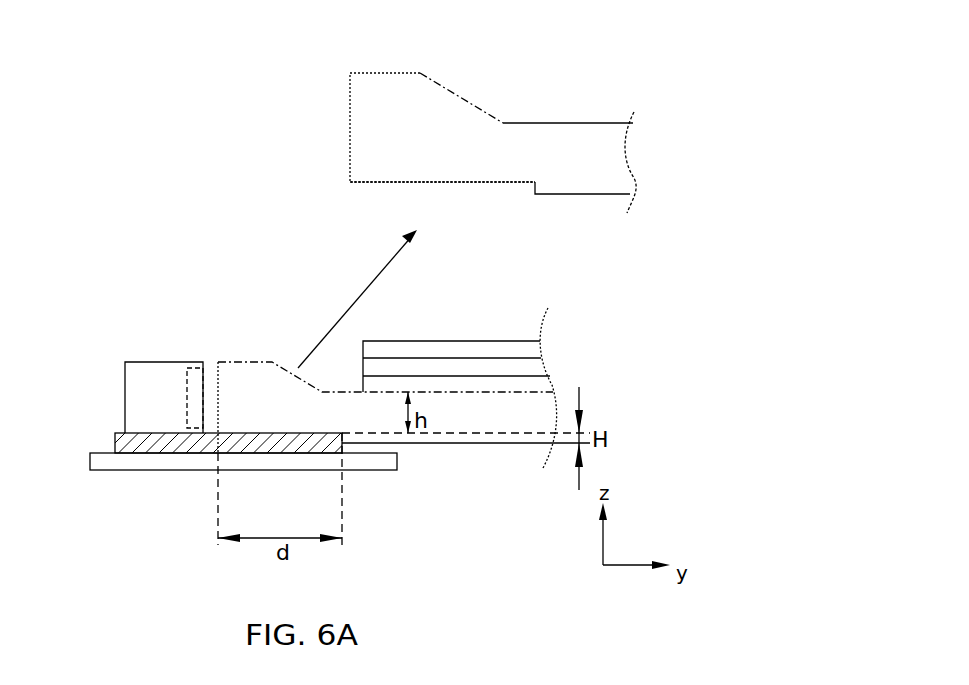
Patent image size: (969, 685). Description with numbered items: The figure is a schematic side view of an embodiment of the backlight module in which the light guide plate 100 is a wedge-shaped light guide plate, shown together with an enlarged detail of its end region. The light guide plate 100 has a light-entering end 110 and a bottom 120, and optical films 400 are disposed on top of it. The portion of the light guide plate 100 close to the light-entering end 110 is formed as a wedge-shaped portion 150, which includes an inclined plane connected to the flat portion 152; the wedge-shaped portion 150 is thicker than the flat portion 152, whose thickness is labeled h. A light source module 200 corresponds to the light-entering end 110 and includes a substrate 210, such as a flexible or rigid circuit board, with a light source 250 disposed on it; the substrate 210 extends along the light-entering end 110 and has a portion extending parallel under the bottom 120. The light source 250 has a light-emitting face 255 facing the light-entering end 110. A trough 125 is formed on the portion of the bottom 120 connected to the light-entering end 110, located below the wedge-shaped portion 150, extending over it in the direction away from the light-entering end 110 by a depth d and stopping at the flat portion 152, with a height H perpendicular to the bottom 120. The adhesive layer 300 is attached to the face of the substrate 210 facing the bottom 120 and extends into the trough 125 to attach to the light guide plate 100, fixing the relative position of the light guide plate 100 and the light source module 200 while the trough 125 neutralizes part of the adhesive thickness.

The light guide plate 100 is at (621, 47).
The light-entering end 110 is at (216, 368).
The bottom 120 is at (468, 443).
The trough 125 is at (458, 200).
The wedge-shaped portion 150 is at (402, 88).
The flat portion 152 is at (580, 143).
The light source module 200 is at (106, 382).
The substrate 210 is at (98, 460).
The light source 250 is at (160, 417).
The light-emitting face 255 is at (205, 393).
The adhesive layer 300 is at (287, 450).
The optical film 400 is at (545, 350).